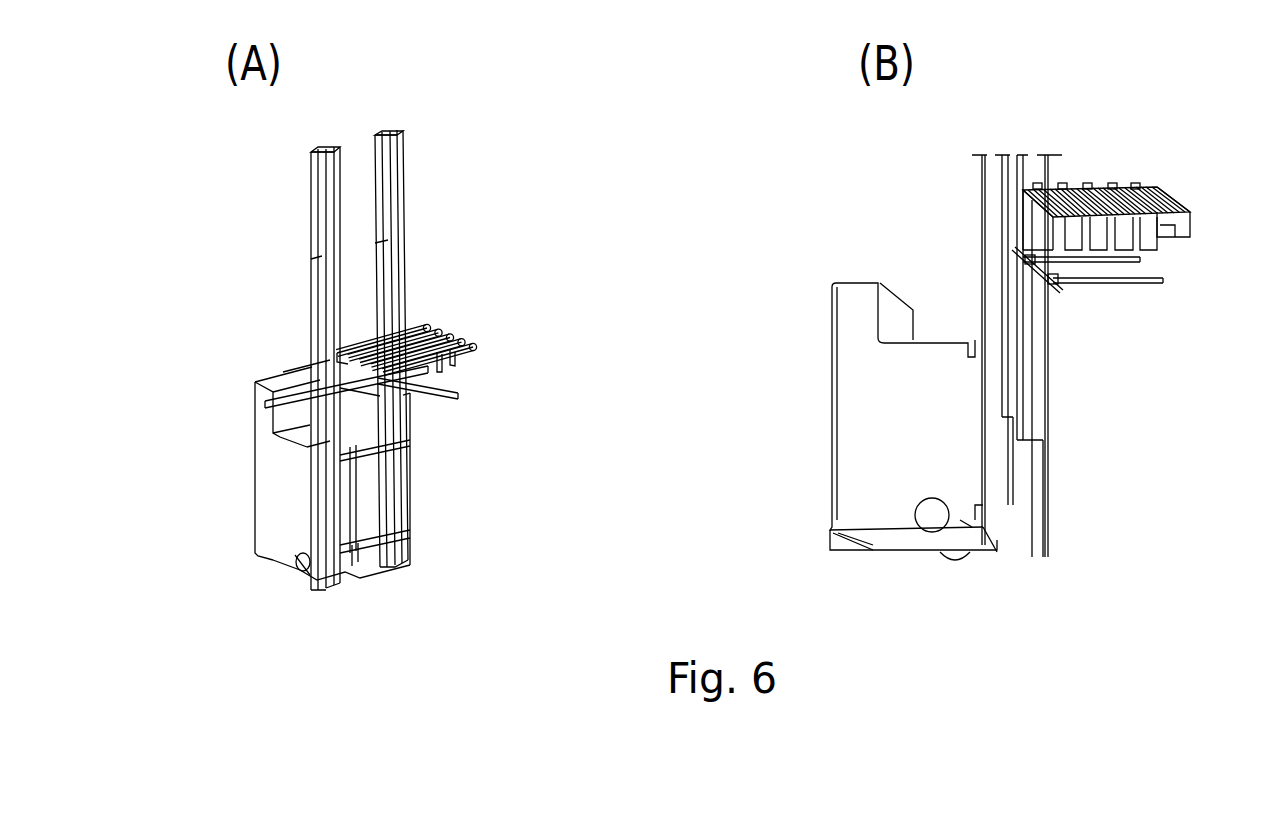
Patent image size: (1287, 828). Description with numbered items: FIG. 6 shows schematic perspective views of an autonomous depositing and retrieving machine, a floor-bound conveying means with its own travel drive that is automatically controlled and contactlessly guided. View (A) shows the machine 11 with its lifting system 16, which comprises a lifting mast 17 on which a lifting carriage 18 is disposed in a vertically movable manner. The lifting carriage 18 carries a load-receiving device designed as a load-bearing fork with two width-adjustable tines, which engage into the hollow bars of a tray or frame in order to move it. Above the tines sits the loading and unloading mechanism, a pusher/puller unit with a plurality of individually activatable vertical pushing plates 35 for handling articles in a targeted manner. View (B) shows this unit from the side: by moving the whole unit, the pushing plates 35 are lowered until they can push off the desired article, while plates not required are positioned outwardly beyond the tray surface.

The conveying device 11 is at (257, 193).
The lifting system 16 is at (404, 127).
The lifting mast 17 is at (405, 180).
The lifting carriage 18 is at (323, 397).
The pushing plates 35 is at (1170, 232).